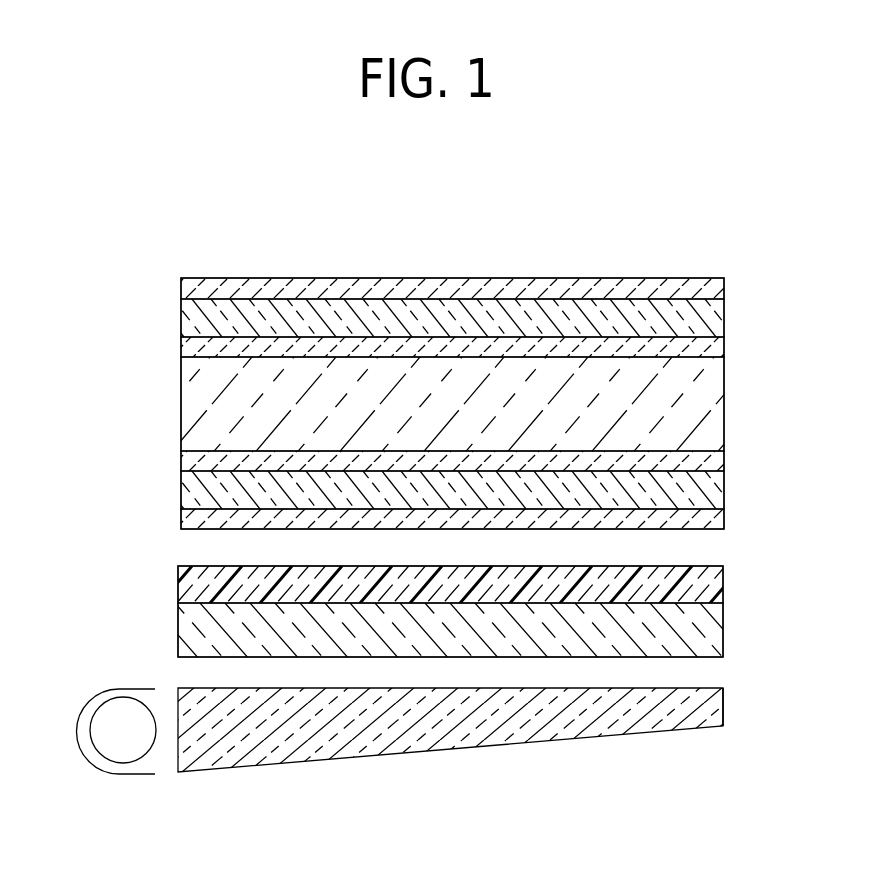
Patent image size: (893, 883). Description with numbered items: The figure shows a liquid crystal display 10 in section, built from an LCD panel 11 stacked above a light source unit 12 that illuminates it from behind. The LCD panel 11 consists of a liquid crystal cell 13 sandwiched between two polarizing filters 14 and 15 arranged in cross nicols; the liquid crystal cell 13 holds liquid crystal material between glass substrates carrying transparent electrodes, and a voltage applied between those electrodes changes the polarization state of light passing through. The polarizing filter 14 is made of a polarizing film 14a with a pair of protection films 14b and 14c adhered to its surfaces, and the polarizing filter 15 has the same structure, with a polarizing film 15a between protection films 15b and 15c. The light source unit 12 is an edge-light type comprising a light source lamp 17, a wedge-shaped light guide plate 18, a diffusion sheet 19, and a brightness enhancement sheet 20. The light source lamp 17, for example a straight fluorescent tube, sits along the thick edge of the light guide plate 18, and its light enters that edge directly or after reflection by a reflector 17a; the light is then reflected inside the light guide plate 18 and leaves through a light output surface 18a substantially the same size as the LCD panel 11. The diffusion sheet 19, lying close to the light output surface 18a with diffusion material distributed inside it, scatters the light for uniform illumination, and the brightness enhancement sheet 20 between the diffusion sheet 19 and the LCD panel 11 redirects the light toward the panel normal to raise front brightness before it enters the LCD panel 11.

The liquid crystal display 10 is at (643, 209).
The LCD panel 11 is at (762, 278).
The light source unit 12 is at (804, 566).
The liquid crystal cell 13 is at (186, 400).
The polarizing filter 14 is at (113, 279).
The polarizing film 14a is at (176, 317).
The protection film 14b is at (180, 288).
The protection film 14c is at (186, 348).
The polarizing filter 15 is at (113, 451).
The polarizing film 15a is at (176, 491).
The protection film 15b is at (182, 460).
The protection film 15c is at (186, 517).
The light source lamp 17 is at (125, 763).
The reflector 17a is at (97, 768).
The light guide plate 18 is at (412, 752).
The light output surface 18a is at (716, 678).
The diffusion sheet 19 is at (178, 632).
The brightness enhancement sheet 20 is at (193, 582).